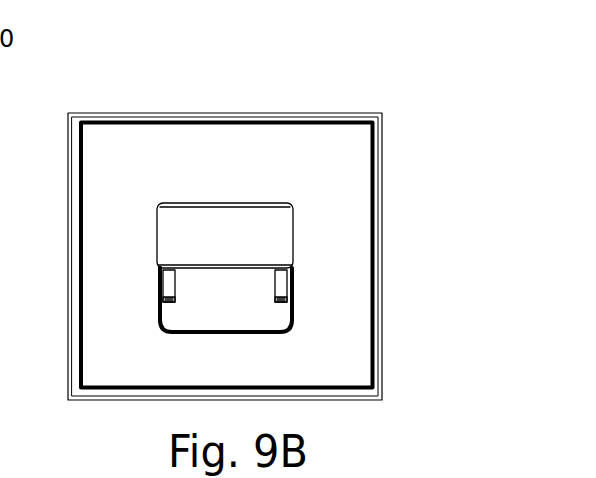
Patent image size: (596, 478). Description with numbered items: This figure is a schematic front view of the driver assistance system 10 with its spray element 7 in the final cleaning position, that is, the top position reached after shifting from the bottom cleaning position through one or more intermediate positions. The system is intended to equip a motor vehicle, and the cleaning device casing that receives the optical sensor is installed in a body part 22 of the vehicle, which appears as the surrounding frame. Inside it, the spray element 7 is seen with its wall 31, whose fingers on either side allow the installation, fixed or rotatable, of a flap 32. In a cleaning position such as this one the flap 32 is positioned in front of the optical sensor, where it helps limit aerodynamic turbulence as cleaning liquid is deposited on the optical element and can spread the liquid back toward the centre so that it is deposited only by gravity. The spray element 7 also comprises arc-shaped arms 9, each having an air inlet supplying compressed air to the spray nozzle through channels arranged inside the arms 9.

The driver assistance system 10 is at (377, 103).
The body part 22 is at (345, 174).
The flap 32 is at (275, 233).
The wall 31 is at (247, 303).
The arms 9 is at (282, 283).
The spray element 7 is at (147, 280).